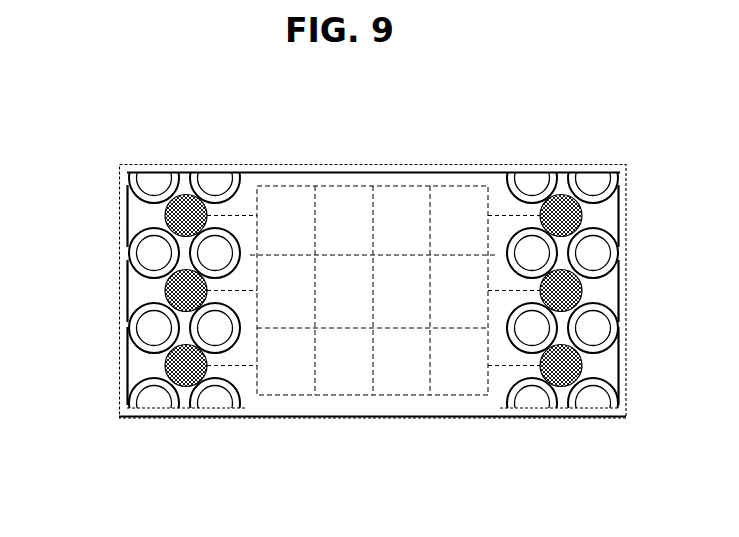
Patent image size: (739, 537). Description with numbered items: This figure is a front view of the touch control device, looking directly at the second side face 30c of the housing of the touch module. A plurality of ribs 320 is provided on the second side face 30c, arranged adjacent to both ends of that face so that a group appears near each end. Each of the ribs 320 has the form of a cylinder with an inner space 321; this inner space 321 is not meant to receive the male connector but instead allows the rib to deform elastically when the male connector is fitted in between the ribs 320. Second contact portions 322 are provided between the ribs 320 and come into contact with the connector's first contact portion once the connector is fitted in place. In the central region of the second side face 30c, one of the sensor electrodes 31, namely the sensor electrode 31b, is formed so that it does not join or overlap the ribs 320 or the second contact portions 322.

The second side face 30c is at (405, 178).
The ribs 320 is at (143, 233).
The inner space 321 is at (155, 256).
The second contact portions 322 is at (165, 290).
The sensor electrodes 31 is at (372, 332).
The sensor electrode 31b is at (373, 372).